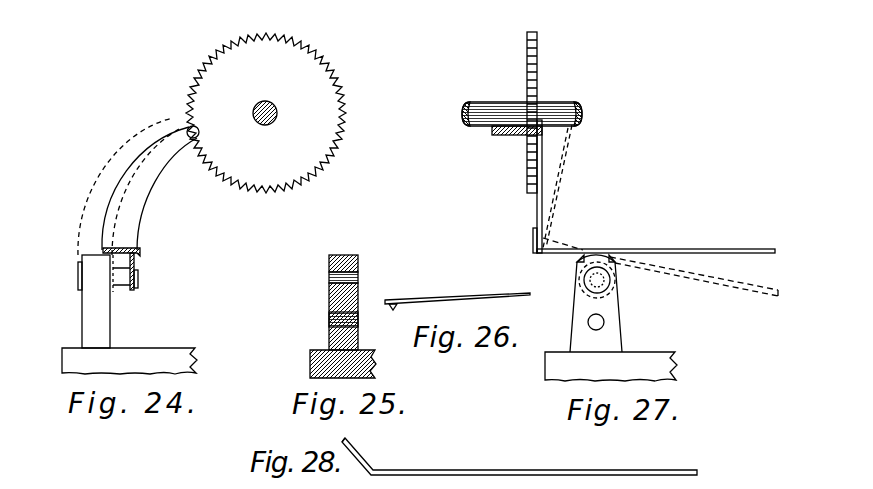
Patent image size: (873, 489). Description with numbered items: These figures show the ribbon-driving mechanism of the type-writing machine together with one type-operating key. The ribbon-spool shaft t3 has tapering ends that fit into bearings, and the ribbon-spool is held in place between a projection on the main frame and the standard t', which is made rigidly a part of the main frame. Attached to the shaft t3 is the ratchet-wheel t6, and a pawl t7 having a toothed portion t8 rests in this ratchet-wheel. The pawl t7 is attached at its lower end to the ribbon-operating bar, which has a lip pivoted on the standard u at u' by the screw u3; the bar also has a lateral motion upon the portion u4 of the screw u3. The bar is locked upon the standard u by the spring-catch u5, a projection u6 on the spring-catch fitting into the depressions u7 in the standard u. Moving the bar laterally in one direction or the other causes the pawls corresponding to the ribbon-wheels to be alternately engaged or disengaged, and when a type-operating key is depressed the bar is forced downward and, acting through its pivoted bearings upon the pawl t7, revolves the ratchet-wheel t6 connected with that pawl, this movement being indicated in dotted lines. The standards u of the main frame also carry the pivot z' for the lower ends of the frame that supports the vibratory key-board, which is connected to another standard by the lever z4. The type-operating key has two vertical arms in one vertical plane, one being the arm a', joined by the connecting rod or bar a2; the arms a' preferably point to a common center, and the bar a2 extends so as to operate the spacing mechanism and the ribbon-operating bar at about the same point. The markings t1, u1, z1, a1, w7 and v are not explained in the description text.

In FIG. 24, the standard t' is at (266, 113).
In FIG. 24, the toothed wheel t1 is at (266, 113).
In FIG. 24, the shaft of the ribbon-spool t3 is at (265, 101).
In FIG. 27, the shaft of the ribbon-spool t3 is at (500, 102).
In FIG. 27, the ratchet-wheel t6 is at (537, 52).
In FIG. 24, the pawl t7 is at (143, 210).
In FIG. 27, the pawl t7 is at (542, 185).
In FIG. 24, the toothed portion of pawl t8 is at (199, 128).
In FIG. 27, the toothed portion of pawl t8 is at (497, 136).
In FIG. 24, the standard u is at (96, 301).
In FIG. 25, the standard u is at (338, 330).
In FIG. 27, the standard u is at (596, 303).
In FIG. 24, the pivot of ribbon-operating bar lip u' is at (147, 271).
In FIG. 27, the pivot of ribbon-operating bar lip u' is at (609, 280).
In FIG. 24, the pivot pin u1 is at (140, 268).
In FIG. 27, the pivot pin u1 is at (610, 283).
In FIG. 24, the screw u3 is at (67, 276).
In FIG. 24, the portion of screw u4 is at (124, 292).
In FIG. 26, the spring-catch u5 is at (465, 297).
In FIG. 26, the projection of spring-catch u6 is at (394, 310).
In FIG. 27, the projection of spring-catch u6 is at (633, 262).
In FIG. 25, the depressions u7 is at (338, 255).
In FIG. 25, the collar w7 is at (355, 255).
In FIG. 25, the pivot of frame Z z' is at (353, 319).
In FIG. 27, the pivot of frame Z z' is at (613, 320).
In FIG. 25, the hole z1 is at (358, 320).
In FIG. 27, the hole z1 is at (604, 321).
In FIG. 24, the lever z4 is at (108, 255).
In FIG. 27, the bar v is at (698, 249).
In FIG. 28, the vertical arm of type-operating key a' is at (357, 443).
In FIG. 28, the bent end a1 is at (358, 452).
In FIG. 28, the connecting rod or bar a2 is at (519, 456).